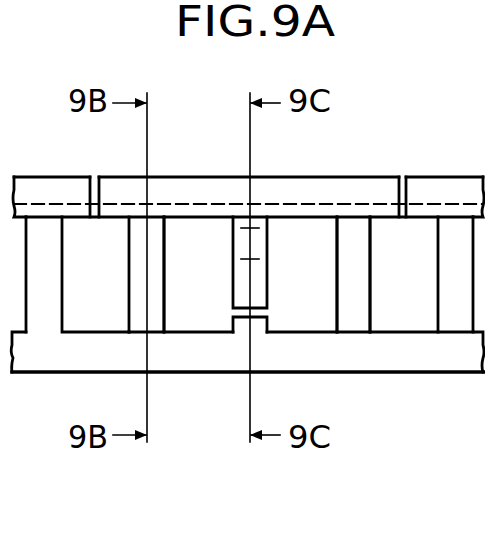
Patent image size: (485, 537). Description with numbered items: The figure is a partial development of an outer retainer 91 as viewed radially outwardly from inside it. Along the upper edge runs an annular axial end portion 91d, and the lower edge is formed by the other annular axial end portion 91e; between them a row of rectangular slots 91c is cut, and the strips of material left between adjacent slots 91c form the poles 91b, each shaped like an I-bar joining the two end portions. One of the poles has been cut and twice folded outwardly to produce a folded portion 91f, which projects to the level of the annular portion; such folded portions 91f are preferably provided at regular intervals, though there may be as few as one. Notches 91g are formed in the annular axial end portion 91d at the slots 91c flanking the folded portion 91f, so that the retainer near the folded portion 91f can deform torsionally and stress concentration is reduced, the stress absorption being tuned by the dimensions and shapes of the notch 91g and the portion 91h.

The outer retainer 91 is at (56, 389).
The pole 91b is at (138, 303).
The rectangular slot 91c is at (64, 273).
The annular axial end portion 91d is at (268, 191).
The annular axial end portion 91e is at (425, 360).
The folded portion 91f is at (240, 291).
The notch 91g is at (86, 170).
The portion 91h is at (138, 331).